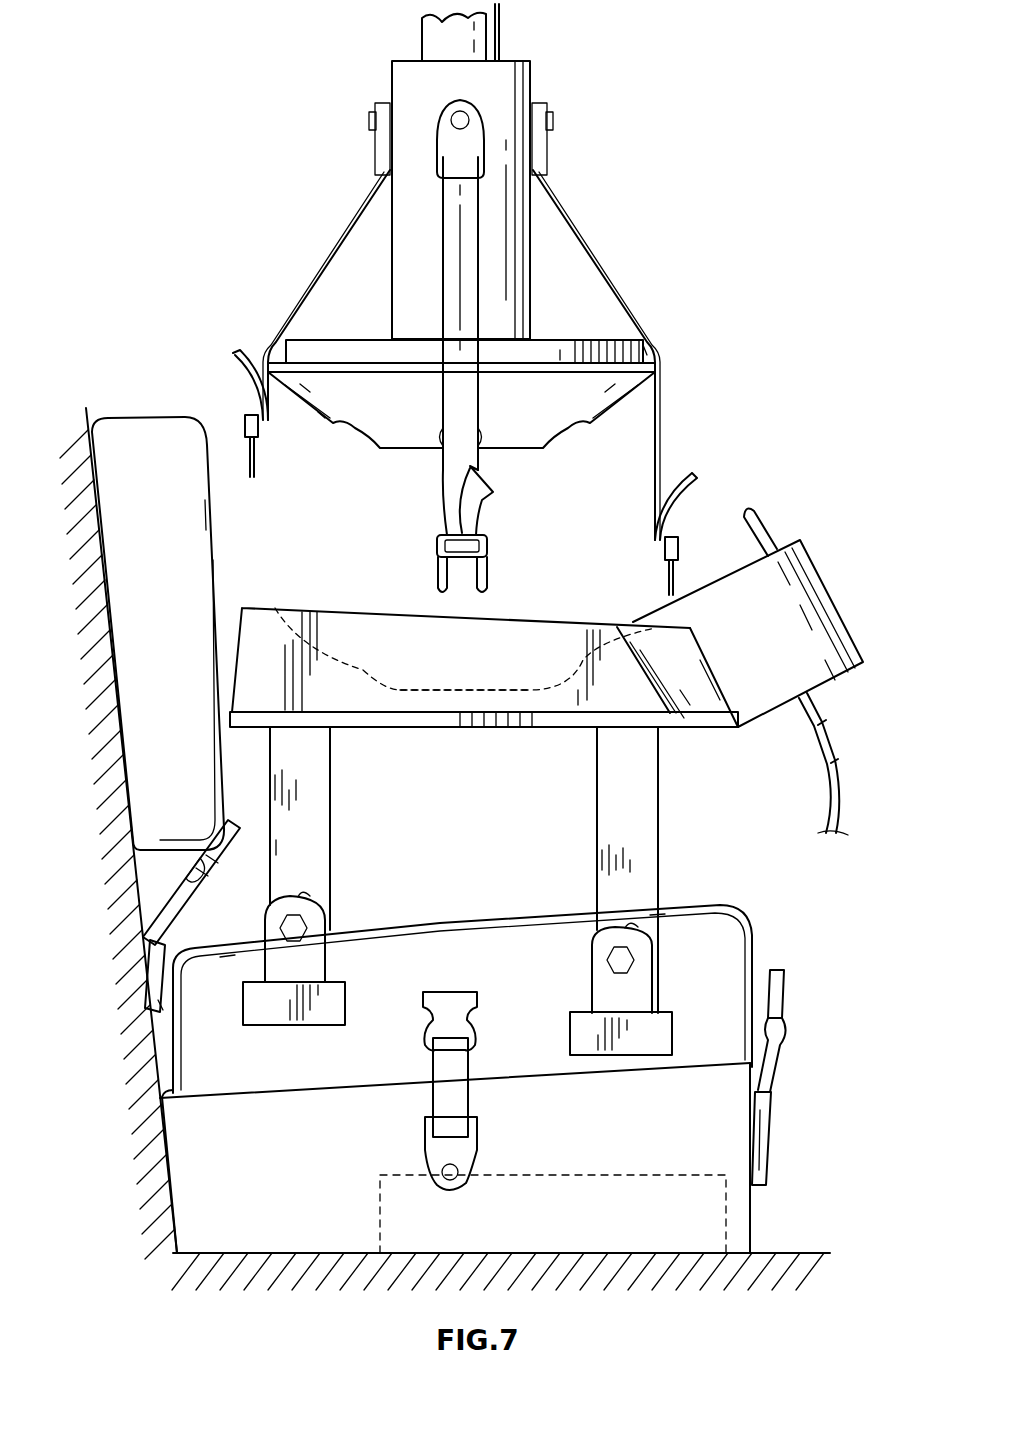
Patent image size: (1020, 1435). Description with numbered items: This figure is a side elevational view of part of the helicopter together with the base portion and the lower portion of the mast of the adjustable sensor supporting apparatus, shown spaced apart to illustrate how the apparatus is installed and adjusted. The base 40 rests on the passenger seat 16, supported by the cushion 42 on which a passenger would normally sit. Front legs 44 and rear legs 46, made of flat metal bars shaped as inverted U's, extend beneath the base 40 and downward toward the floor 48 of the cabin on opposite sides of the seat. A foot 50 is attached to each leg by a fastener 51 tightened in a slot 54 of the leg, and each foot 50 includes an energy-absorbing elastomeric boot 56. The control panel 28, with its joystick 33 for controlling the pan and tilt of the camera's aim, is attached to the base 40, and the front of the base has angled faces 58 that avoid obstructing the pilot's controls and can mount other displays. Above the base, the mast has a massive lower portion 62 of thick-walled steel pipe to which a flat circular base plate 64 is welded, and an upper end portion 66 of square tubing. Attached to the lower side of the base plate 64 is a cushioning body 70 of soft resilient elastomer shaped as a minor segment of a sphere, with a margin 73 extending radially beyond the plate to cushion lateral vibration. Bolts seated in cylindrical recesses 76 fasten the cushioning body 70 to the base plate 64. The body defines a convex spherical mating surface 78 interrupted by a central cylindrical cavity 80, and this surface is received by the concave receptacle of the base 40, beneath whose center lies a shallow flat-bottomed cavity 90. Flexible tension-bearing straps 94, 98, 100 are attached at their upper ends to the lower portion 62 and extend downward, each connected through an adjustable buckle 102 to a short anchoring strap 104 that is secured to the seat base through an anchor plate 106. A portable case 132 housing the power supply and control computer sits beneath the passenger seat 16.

The passenger seat 16 is at (160, 408).
The control panel 28 is at (823, 577).
The joystick 33 is at (753, 512).
The base 40 is at (327, 606).
The cushion 42 is at (753, 930).
The front legs 44 is at (600, 835).
The rear legs 46 is at (315, 835).
The floor 48 is at (277, 1253).
The foot 50 is at (640, 992).
The pivot bolt 51 is at (626, 960).
The slot 54 is at (630, 926).
The boot 56 is at (347, 1000).
The angled face 58 is at (697, 697).
The lower portion 62 is at (532, 83).
The base plate 64 is at (563, 340).
The upper end portion 66 is at (500, 33).
The cushioning body 70 is at (363, 382).
The margin 73 is at (655, 345).
The cylindrical recesses 76 is at (488, 450).
The mating surface 78 is at (318, 420).
The cylindrical cavity 80 is at (365, 668).
The flat-bottomed cavity 90 is at (478, 690).
The strap 94 is at (455, 260).
The strap 98 is at (560, 212).
The strap 100 is at (340, 233).
The adjustable buckle 102 is at (252, 477).
The anchoring strap 104 is at (460, 1097).
The anchor plate 106 is at (425, 1150).
The portable case 132 is at (620, 1175).